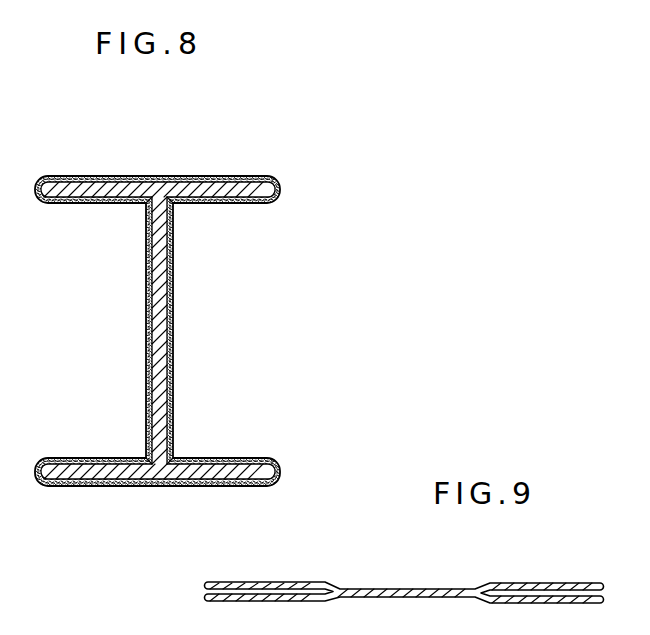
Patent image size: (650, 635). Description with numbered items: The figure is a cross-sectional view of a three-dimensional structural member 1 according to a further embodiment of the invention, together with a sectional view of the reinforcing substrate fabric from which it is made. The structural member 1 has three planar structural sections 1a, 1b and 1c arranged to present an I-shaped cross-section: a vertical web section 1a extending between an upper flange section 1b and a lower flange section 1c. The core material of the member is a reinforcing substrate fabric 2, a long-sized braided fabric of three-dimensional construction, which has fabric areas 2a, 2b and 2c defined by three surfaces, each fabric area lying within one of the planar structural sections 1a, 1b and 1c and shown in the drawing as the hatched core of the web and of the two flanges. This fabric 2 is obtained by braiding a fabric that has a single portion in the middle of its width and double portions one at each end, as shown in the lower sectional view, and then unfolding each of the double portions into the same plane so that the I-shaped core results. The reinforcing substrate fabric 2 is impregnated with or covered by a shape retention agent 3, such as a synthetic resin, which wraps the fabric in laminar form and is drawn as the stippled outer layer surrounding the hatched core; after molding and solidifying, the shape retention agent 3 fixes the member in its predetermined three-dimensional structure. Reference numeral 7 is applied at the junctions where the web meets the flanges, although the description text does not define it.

The three-dimensional structural member 1 is at (226, 121).
The planar structural section 1a is at (173, 332).
The planar structural section 1b is at (237, 174).
The planar structural section 1c is at (244, 459).
The reinforcing substrate fabric 2 is at (154, 331).
The fabric area 2a is at (167, 368).
The fabric area 2b is at (105, 193).
The fabric area 2c is at (112, 473).
The shape retention agent 3 is at (170, 298).
The fillet junction 7 is at (160, 178).